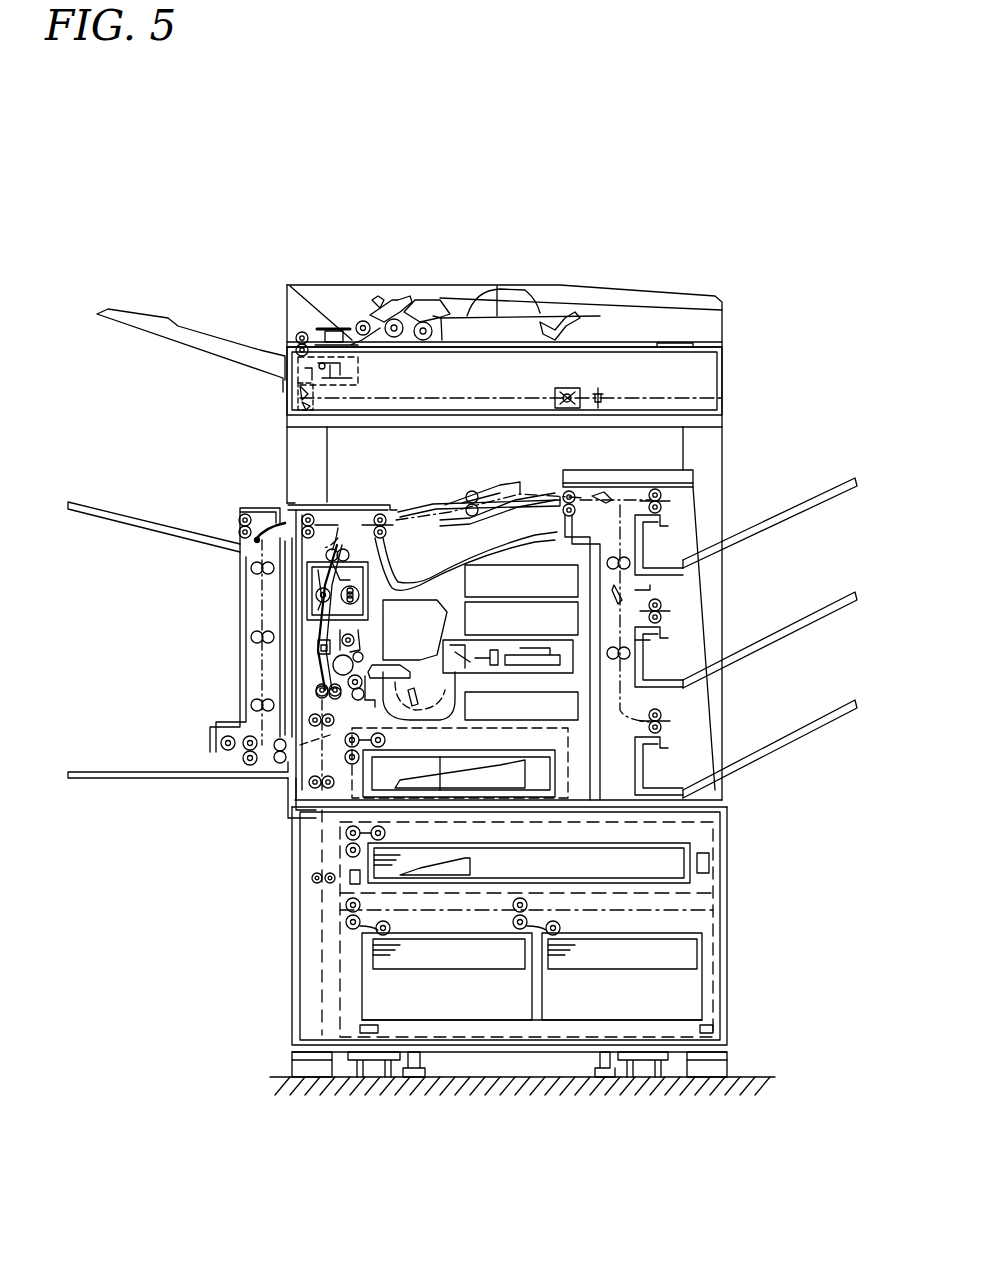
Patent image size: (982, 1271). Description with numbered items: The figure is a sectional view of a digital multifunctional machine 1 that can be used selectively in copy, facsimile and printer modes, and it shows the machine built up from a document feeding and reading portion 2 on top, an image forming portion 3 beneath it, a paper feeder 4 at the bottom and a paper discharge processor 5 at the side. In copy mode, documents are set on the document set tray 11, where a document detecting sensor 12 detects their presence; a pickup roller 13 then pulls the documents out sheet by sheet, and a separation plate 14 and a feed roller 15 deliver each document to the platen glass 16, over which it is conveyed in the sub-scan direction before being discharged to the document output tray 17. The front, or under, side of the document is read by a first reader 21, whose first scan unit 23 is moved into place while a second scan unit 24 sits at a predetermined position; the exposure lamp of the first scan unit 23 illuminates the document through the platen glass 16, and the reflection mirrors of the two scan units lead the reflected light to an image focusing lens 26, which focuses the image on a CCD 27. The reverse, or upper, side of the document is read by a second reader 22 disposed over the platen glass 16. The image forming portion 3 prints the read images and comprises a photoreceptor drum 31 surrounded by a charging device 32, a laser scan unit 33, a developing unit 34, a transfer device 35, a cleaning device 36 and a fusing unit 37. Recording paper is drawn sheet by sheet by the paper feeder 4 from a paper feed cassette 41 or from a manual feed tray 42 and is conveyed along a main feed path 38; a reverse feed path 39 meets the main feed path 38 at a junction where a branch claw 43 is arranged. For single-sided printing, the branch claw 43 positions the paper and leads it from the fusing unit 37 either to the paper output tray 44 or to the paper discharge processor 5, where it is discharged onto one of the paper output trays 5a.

The digital multifunctional machine 1 is at (515, 162).
The document feeding and reading portion 2 is at (770, 350).
The image forming portion 3 is at (305, 488).
The paper feeder 4 is at (272, 935).
The paper discharge processor 5 is at (794, 471).
The paper output trays 5a is at (808, 728).
The document set tray 11 is at (497, 286).
The document detecting sensor 12 is at (553, 325).
The pickup roller 13 is at (424, 340).
The separation plate 14 is at (373, 301).
The feed roller 15 is at (396, 338).
The platen glass 16 is at (657, 349).
The document output tray 17 is at (150, 313).
The first reader 21 is at (707, 395).
The second reader 22 is at (332, 334).
The first scan unit 23 is at (345, 382).
The second scan unit 24 is at (294, 397).
The image focusing lens 26 is at (575, 390).
The CCD 27 is at (602, 392).
The photoreceptor drum 31 is at (367, 668).
The charging device 32 is at (355, 660).
The laser scan unit 33 is at (478, 648).
The developing unit 34 is at (457, 717).
The transfer device 35 is at (318, 645).
The cleaning device 36 is at (387, 583).
The fusing unit 37 is at (310, 610).
The main feed path 38 is at (325, 712).
The reverse feed path 39 is at (253, 645).
The paper feed cassette 41 is at (693, 853).
The manual feed tray 42 is at (118, 772).
The branch claw 43 is at (342, 525).
The paper output tray 44 is at (510, 492).